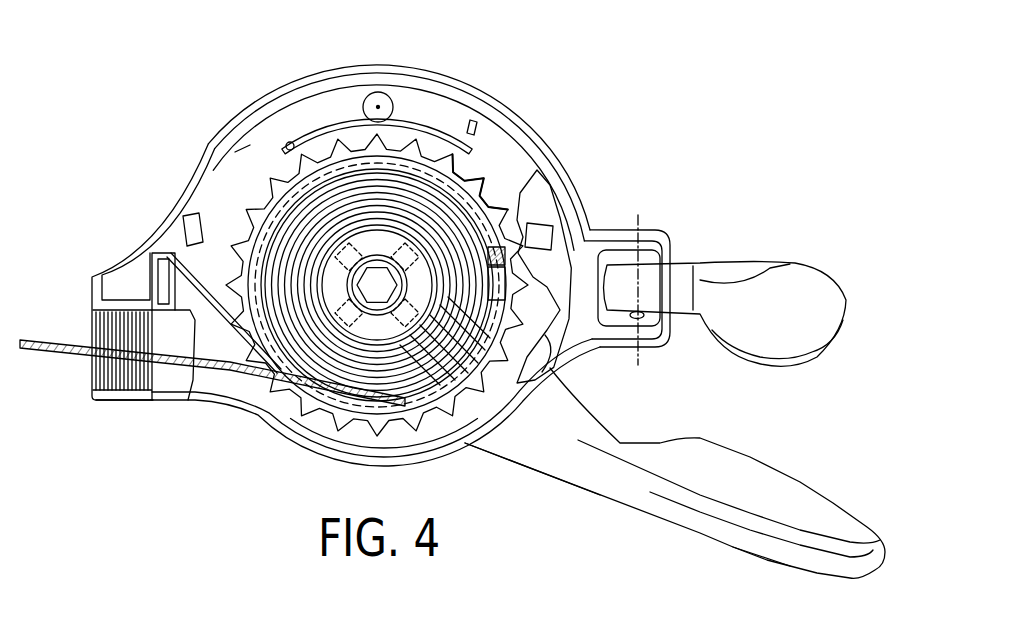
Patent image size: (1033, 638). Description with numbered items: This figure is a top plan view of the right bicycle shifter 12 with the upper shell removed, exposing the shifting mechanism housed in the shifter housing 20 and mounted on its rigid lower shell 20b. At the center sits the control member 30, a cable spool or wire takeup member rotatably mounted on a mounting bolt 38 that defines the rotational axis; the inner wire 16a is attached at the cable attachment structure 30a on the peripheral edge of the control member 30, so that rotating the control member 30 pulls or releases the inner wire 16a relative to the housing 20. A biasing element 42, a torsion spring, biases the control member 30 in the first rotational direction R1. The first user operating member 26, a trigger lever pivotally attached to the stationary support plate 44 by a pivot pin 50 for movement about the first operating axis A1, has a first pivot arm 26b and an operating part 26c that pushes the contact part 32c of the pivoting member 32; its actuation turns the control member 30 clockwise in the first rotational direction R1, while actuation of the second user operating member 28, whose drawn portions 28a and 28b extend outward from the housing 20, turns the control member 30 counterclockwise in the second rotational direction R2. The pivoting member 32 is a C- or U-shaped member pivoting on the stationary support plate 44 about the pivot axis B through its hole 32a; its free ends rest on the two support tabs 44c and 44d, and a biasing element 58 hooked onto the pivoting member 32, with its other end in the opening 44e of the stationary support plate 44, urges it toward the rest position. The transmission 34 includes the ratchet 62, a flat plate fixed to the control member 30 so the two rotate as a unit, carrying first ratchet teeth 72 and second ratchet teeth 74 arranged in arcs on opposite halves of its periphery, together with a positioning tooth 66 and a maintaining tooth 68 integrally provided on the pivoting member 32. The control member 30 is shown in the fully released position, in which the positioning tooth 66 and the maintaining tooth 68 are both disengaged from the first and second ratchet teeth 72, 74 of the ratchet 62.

The bicycle shifter 12 is at (703, 112).
The inner wire 16a is at (67, 345).
The shifter housing 20 is at (227, 420).
The lower shell 20b is at (565, 145).
The first user operating member 26 is at (823, 277).
The first pivot arm 26b is at (740, 270).
The operating part 26c is at (597, 300).
The second user operating member 28 is at (800, 480).
The user operating portion of winding lever 28a is at (767, 565).
The edge portion of winding lever 28b is at (578, 465).
The control member 30 is at (435, 162).
The cable attachment structure 30a is at (532, 250).
The pivoting member 32 is at (212, 207).
The hole 32a is at (382, 92).
The contact part 32c is at (608, 222).
The transmission 34 is at (297, 408).
The mounting bolt 38 is at (374, 282).
The biasing element 42 is at (197, 367).
The stationary support plate 44 is at (307, 437).
The support tab 44c is at (190, 225).
The support tab 44d is at (552, 225).
The opening 44e is at (287, 147).
The pivot pin 50 is at (645, 320).
The biasing element 58 is at (300, 142).
The ratchet 62 is at (471, 173).
The positioning tooth 66 is at (160, 263).
The maintaining tooth 68 is at (555, 330).
The first ratchet teeth 72 is at (243, 150).
The second ratchet teeth 74 is at (432, 405).
The first operating axis A1 is at (643, 215).
The pivot axis B is at (376, 100).
The first rotational direction R1 is at (484, 20).
The second rotational direction R2 is at (279, 15).